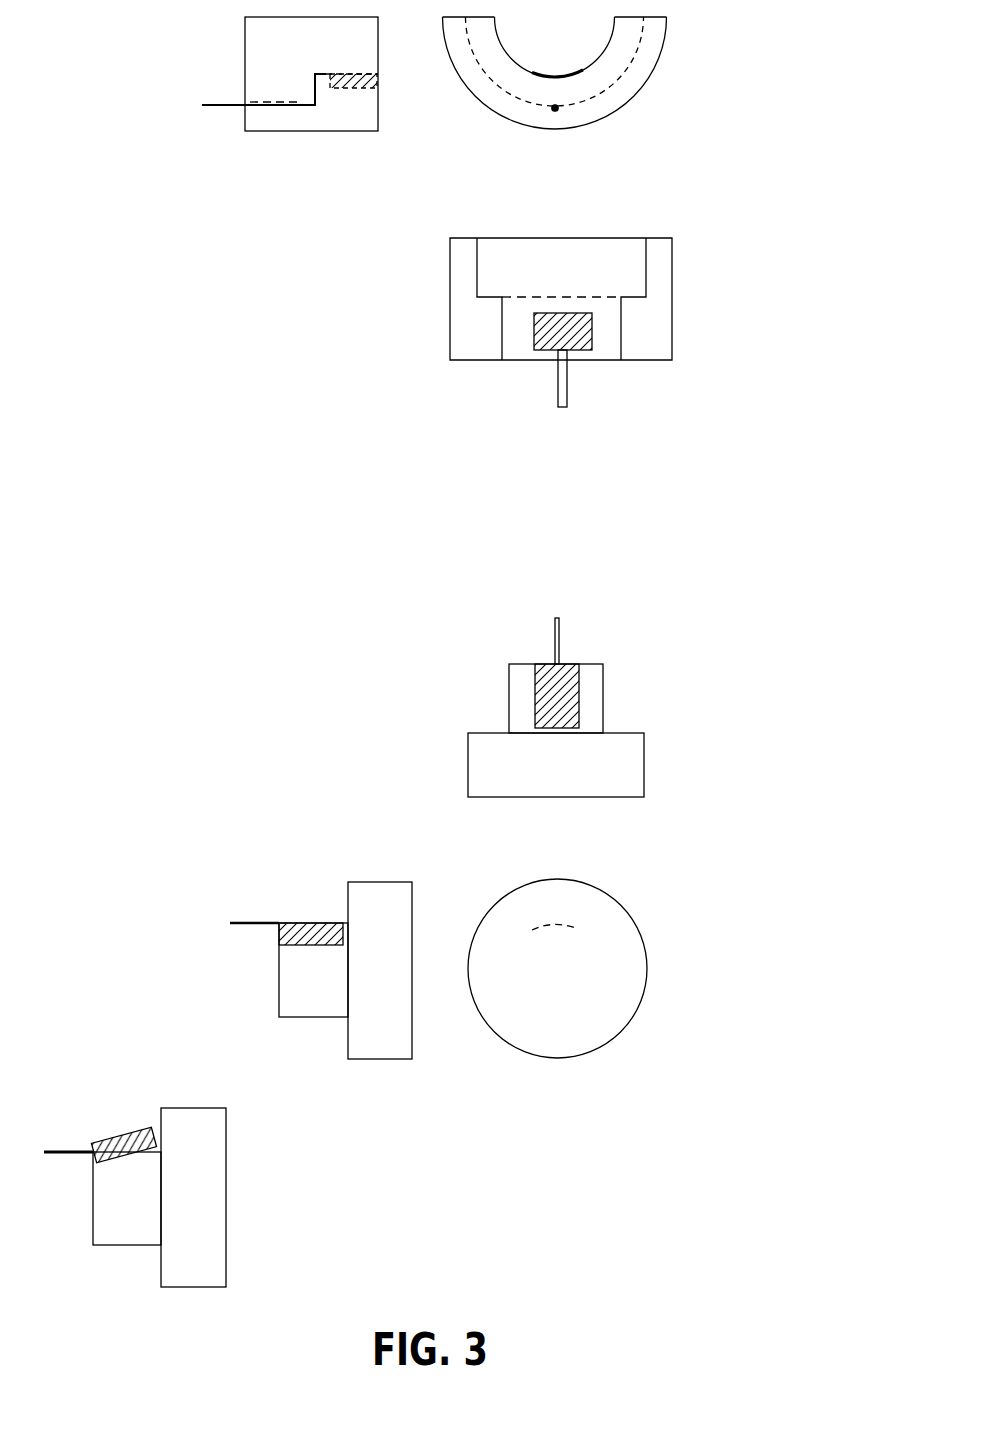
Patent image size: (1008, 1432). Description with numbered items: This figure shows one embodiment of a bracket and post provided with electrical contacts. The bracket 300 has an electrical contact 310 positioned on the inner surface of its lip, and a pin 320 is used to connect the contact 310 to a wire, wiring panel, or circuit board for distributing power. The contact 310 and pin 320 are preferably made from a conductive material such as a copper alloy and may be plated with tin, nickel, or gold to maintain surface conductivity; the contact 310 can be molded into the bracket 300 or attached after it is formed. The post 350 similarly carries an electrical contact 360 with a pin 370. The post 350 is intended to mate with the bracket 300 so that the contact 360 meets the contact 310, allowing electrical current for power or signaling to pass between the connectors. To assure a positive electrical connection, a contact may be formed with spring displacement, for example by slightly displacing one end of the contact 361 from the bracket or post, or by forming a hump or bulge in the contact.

The bracket 300 is at (685, 271).
The electrical contact 310 is at (592, 330).
The pin 320 is at (558, 380).
The post 350 is at (652, 920).
The electrical contact 360 is at (578, 697).
The contact 361 is at (120, 1130).
The pin 370 is at (573, 624).